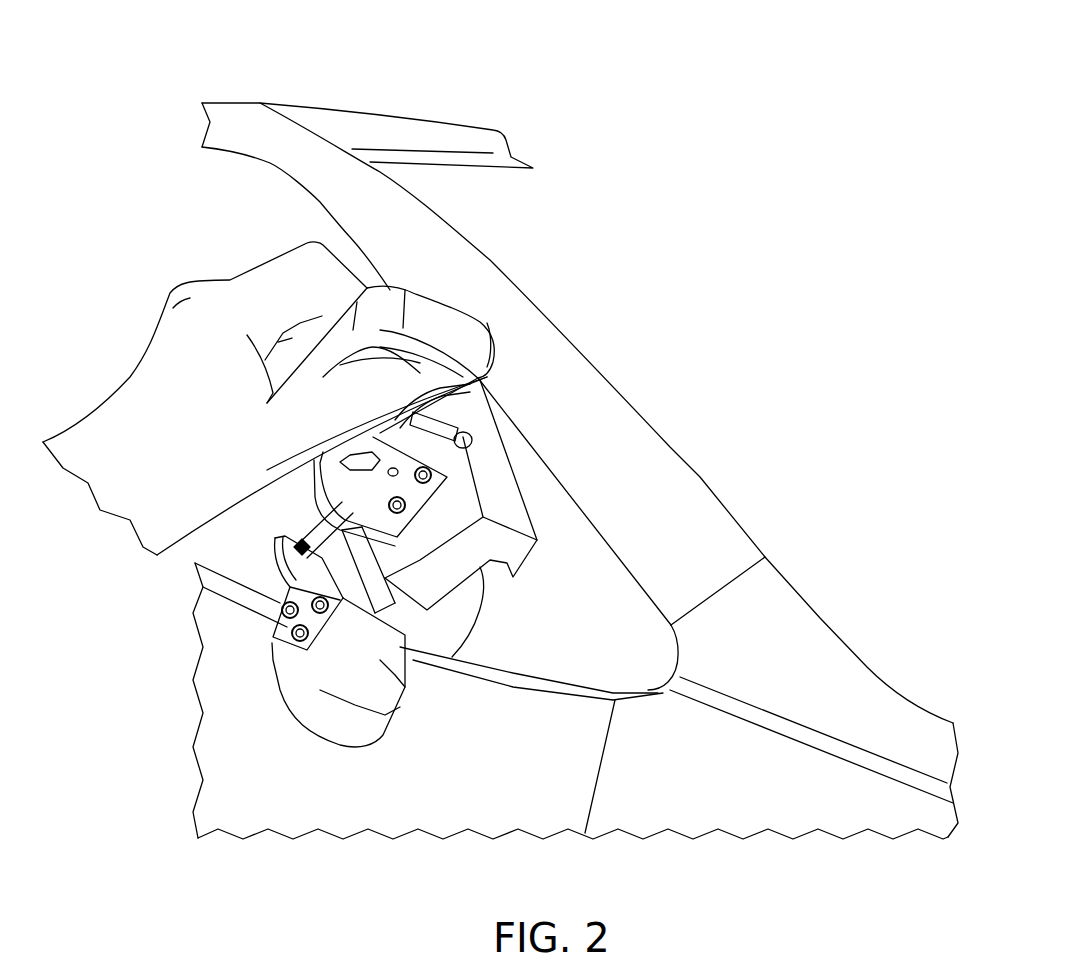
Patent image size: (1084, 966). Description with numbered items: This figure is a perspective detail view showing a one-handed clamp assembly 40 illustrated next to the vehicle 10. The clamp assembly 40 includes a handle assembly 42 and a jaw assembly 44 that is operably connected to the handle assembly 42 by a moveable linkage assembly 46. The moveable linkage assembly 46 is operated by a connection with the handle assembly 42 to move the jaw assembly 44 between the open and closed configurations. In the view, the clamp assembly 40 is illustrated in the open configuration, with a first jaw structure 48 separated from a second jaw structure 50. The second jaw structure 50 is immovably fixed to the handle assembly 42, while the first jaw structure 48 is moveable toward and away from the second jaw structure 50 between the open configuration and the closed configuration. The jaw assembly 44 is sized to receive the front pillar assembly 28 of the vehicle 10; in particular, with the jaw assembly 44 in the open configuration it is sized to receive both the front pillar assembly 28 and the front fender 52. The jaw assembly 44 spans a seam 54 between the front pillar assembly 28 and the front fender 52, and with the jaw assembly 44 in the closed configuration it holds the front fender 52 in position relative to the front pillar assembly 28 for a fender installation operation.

The vehicle 10 is at (388, 100).
The front pillar assembly 28 is at (688, 440).
The clamp assembly 40 is at (391, 485).
The handle assembly 42 is at (462, 283).
The jaw assembly 44 is at (545, 493).
The moveable linkage assembly 46 is at (468, 475).
The first jaw structure 48 is at (408, 742).
The second jaw structure 50 is at (524, 591).
The front fender 52 is at (852, 676).
The seam 54 is at (733, 580).